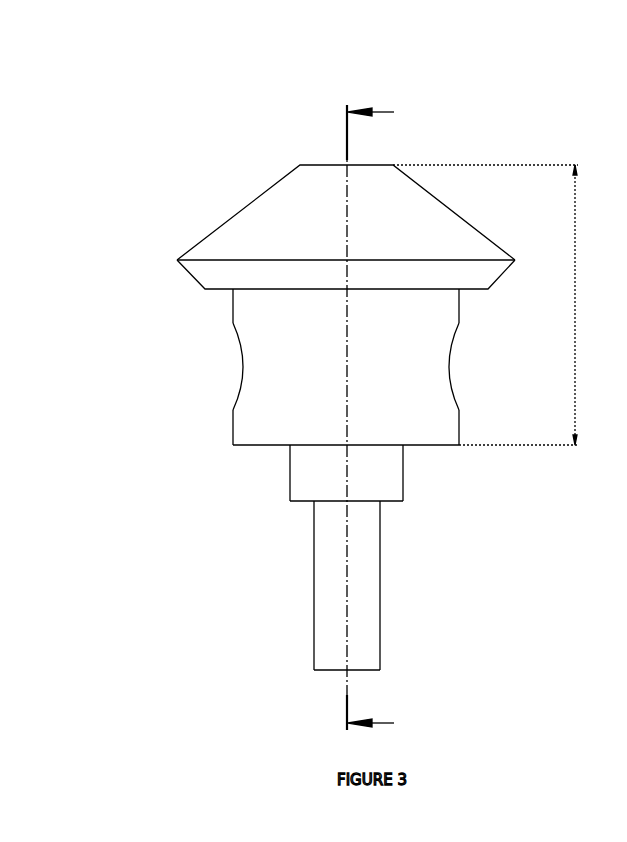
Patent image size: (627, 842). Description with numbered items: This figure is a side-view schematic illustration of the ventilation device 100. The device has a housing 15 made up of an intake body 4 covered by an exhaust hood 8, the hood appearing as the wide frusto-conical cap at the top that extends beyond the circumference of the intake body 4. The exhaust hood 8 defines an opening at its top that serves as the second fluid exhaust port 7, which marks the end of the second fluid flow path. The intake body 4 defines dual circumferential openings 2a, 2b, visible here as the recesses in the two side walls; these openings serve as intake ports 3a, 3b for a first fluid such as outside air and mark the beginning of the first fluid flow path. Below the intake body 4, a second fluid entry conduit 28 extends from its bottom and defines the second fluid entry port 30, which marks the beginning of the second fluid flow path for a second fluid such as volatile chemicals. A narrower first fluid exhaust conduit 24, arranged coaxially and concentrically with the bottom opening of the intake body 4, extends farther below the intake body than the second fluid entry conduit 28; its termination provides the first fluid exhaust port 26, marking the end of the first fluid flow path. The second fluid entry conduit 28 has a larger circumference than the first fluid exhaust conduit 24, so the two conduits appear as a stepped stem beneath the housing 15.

The ventilation device 100 is at (161, 151).
The second fluid exhaust port 7 is at (380, 146).
The exhaust hood 8 is at (416, 206).
The housing 15 is at (575, 305).
The intake body 4 is at (446, 428).
The first intake port 3a is at (231, 358).
The second intake port 3b is at (460, 355).
The first circumferential opening 2a is at (224, 405).
The second circumferential opening 2b is at (467, 403).
The second fluid entry conduit 28 is at (373, 475).
The second fluid entry port 30 is at (402, 507).
The first fluid exhaust conduit 24 is at (362, 597).
The first fluid exhaust port 26 is at (379, 675).